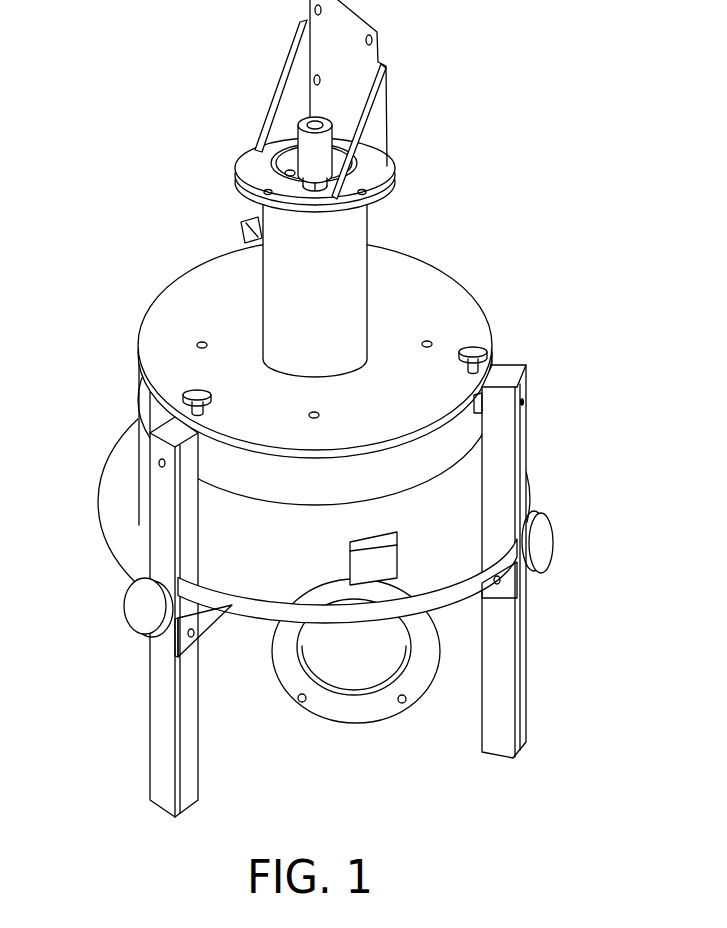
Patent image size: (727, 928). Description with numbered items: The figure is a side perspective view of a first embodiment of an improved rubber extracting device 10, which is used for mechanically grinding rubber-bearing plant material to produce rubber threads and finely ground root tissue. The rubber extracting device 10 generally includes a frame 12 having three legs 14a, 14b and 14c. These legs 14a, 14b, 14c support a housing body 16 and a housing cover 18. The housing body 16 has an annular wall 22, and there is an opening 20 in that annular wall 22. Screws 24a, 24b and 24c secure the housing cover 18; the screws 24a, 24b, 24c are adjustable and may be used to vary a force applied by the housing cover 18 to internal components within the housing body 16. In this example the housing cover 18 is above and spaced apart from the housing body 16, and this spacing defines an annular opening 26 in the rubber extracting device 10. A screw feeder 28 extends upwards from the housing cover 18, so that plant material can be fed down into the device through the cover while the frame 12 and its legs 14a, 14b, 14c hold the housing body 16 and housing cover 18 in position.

The rubber extracting device 10 is at (119, 159).
The frame 12 is at (100, 515).
The leg 14a is at (241, 231).
The leg 14b is at (150, 742).
The leg 14c is at (527, 677).
The housing body 16 is at (440, 510).
The housing cover 18 is at (434, 303).
The opening 20 is at (368, 566).
The annular wall 22 is at (282, 568).
The screw 24a is at (243, 223).
The screw 24b is at (198, 391).
The screw 24c is at (470, 349).
The annular opening 26 is at (130, 388).
The screw feeder 28 is at (368, 226).